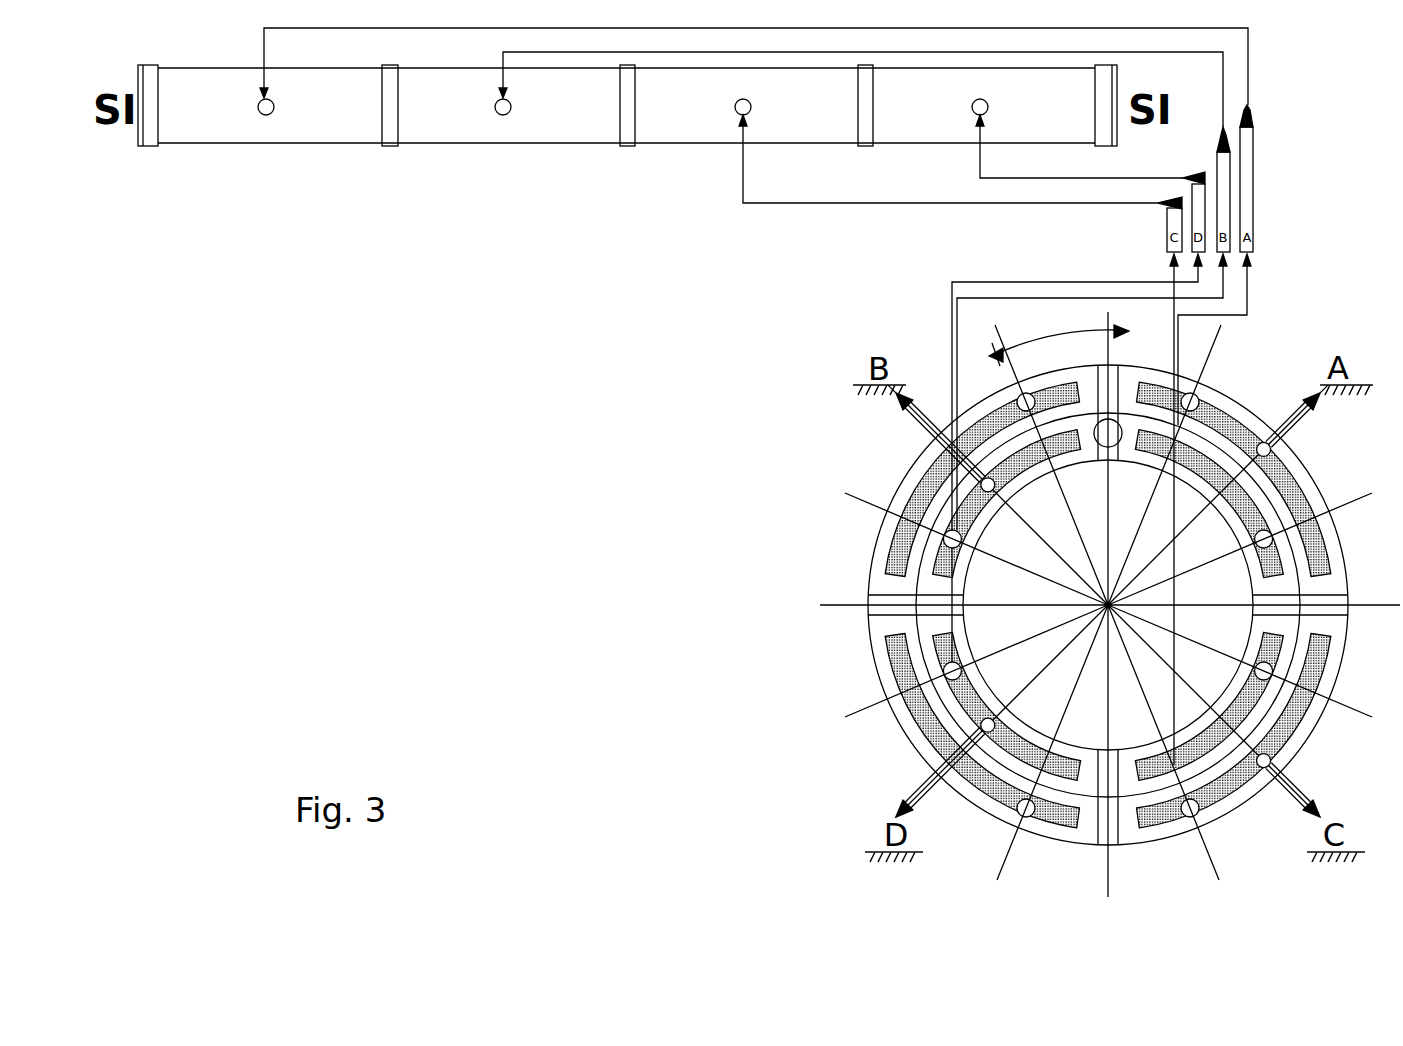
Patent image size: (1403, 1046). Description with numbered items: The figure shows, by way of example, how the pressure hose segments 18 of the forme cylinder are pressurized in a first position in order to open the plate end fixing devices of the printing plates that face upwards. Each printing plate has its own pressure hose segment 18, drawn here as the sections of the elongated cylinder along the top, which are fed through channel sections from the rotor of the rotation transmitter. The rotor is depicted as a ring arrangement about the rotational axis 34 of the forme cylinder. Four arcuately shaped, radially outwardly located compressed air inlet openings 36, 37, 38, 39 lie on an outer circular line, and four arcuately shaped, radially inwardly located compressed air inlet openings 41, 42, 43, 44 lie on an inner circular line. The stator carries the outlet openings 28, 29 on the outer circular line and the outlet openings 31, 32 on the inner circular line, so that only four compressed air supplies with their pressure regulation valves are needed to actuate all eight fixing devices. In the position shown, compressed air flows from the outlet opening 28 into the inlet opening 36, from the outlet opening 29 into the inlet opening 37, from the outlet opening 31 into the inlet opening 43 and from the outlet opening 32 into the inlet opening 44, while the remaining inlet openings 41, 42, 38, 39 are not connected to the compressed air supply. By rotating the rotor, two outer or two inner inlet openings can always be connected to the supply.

The pressure hose segment 18 is at (303, 127).
The outlet opening 28 is at (1271, 449).
The outlet opening 29 is at (1272, 761).
The outlet opening 31 is at (1007, 696).
The outlet opening 32 is at (995, 490).
The rotational axis 34 is at (1108, 582).
The compressed air inlet opening 36 is at (1312, 492).
The compressed air inlet opening 37 is at (1323, 657).
The compressed air inlet opening 38 is at (915, 707).
The compressed air inlet opening 39 is at (912, 492).
The compressed air inlet opening 41 is at (1225, 515).
The compressed air inlet opening 42 is at (1237, 673).
The compressed air inlet opening 43 is at (1025, 747).
The compressed air inlet opening 44 is at (967, 520).